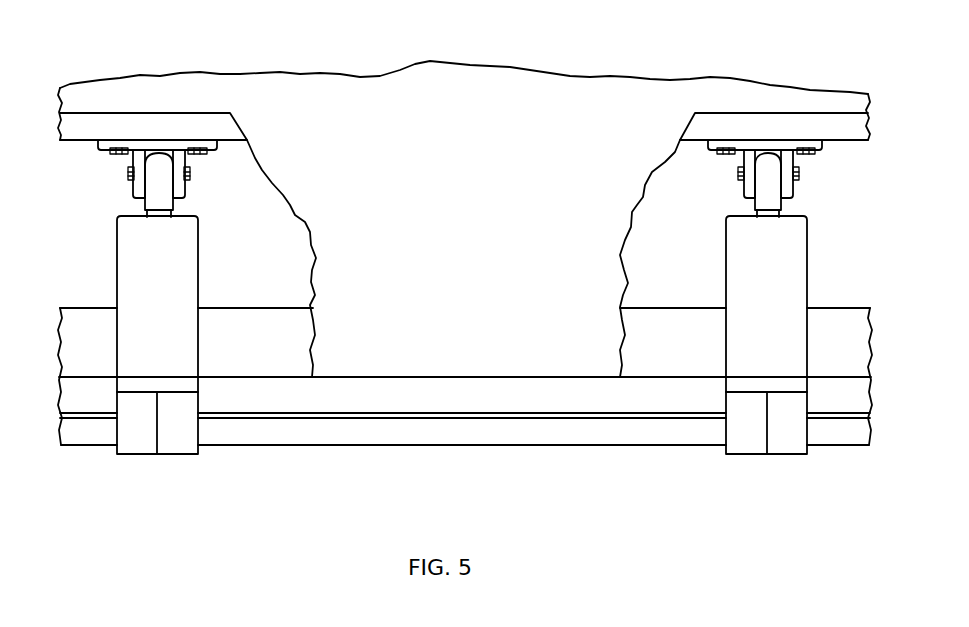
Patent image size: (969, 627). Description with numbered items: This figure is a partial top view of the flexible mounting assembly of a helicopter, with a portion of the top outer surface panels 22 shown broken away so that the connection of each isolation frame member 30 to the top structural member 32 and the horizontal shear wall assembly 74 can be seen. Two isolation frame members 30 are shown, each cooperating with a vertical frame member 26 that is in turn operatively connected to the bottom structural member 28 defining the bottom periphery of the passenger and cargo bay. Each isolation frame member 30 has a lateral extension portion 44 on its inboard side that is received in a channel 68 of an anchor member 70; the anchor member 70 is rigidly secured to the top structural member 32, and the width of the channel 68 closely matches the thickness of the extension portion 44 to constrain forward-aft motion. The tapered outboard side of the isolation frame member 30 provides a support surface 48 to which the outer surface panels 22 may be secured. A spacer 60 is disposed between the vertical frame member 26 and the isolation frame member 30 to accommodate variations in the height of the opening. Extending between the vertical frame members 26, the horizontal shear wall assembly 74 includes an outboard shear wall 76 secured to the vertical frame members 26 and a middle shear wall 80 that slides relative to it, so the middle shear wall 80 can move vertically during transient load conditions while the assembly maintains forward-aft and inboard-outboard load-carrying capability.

The external panels 22 is at (452, 225).
The vertical frame member 26 is at (156, 460).
The bottom structural member 28 is at (341, 428).
The isolation frame member 30 is at (205, 185).
The top structural member 32 is at (785, 122).
The lateral extension portion 44 is at (768, 183).
The support surface 48 is at (145, 272).
The spacer 60 is at (198, 383).
The channel 68 is at (157, 150).
The anchor member 70 is at (222, 142).
The horizontal shear wall assembly 74 is at (638, 378).
The outboard shear wall 76 is at (662, 405).
The middle shear wall 80 is at (662, 353).